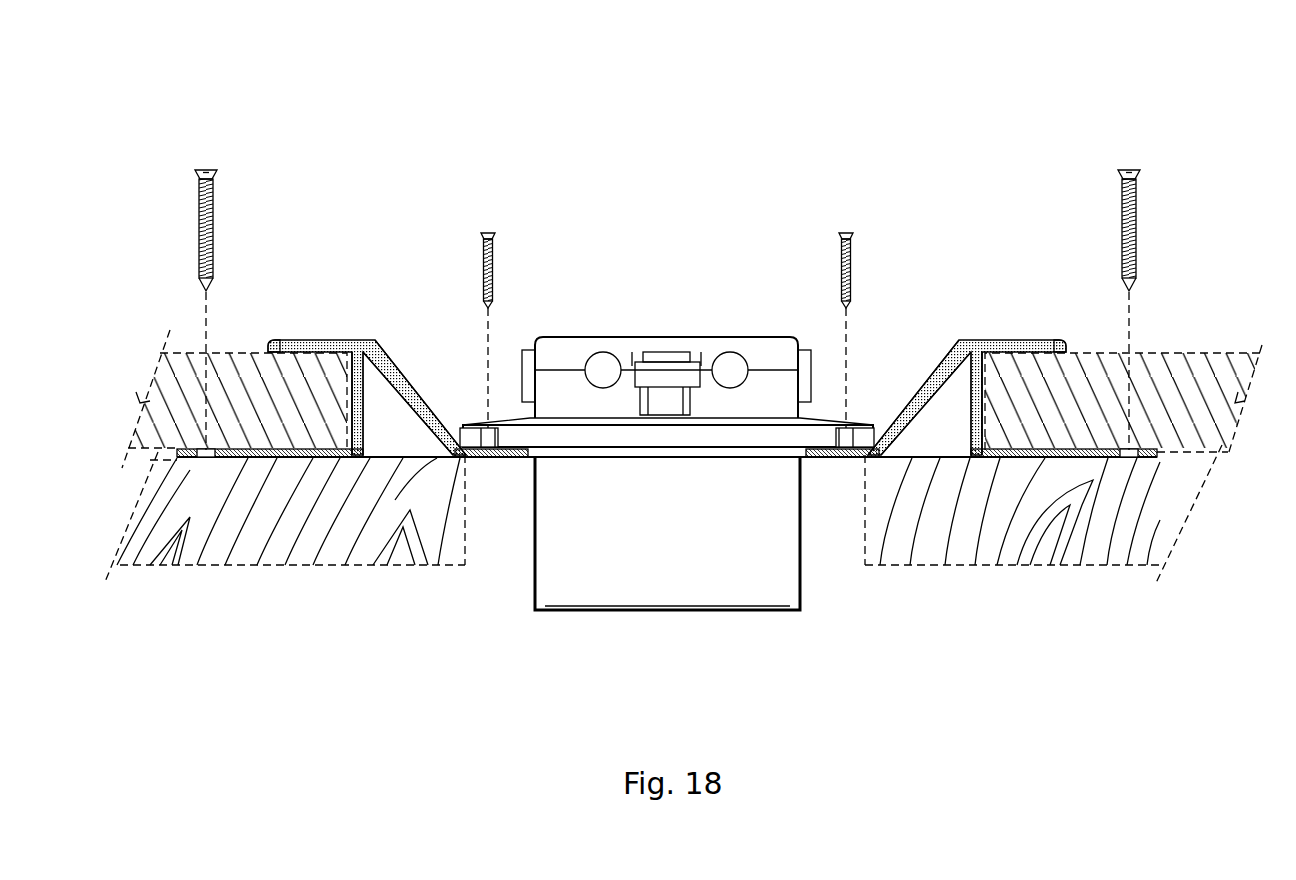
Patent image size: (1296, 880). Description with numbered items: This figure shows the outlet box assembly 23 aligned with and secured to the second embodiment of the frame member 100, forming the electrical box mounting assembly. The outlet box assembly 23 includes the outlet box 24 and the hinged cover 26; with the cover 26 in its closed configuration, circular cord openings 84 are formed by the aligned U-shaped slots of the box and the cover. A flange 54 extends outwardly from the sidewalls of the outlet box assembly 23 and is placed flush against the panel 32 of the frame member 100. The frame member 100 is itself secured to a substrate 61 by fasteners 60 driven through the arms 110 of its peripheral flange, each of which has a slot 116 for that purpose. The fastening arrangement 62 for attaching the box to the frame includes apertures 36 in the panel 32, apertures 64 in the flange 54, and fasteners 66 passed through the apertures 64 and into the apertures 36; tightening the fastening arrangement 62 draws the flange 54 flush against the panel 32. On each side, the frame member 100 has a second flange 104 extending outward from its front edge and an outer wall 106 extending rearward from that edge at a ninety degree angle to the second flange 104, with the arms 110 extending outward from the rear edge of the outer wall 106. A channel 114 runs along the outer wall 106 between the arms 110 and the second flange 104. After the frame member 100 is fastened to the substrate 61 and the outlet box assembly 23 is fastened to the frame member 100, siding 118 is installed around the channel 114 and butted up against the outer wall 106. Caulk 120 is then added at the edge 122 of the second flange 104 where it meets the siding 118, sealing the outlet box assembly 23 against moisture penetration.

The frame member 100 is at (322, 148).
The outlet box assembly 23 is at (757, 633).
The outlet box 24 is at (676, 531).
The hinged cover 26 is at (781, 363).
The panel 32 is at (813, 458).
The apertures 36 is at (488, 458).
The flange 54 is at (715, 440).
The fasteners 60 is at (216, 225).
The substrate 61 is at (178, 545).
The fastening arrangement 62 is at (517, 252).
The apertures 64 is at (487, 425).
The fasteners 66 is at (487, 262).
The circular cord openings 84 is at (603, 368).
The second flange 104 is at (318, 345).
The outer wall 106 is at (360, 400).
The arms 110 is at (258, 458).
The channel 114 is at (348, 383).
The slot 116 is at (206, 458).
The siding 118 is at (280, 405).
The caulk 120 is at (273, 345).
The edge 122 is at (280, 355).